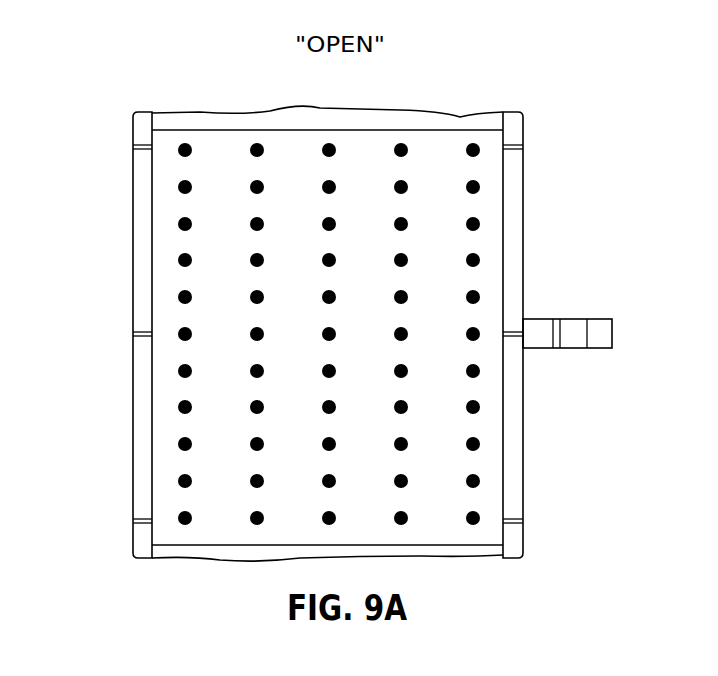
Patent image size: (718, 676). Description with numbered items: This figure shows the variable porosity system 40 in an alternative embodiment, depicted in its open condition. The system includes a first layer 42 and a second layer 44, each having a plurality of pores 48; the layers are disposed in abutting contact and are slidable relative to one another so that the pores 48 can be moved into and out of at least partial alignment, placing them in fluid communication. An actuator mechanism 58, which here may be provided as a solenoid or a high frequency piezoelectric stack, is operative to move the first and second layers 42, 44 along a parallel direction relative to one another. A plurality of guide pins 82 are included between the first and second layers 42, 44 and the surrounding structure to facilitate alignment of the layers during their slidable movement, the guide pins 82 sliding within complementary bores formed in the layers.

The variable porosity system 40 is at (360, 297).
The first layer 42 is at (523, 234).
The second layer 44 is at (443, 148).
The pore 48 is at (327, 185).
The guide pins 82 is at (139, 149).
The actuator mechanism 58 is at (573, 319).